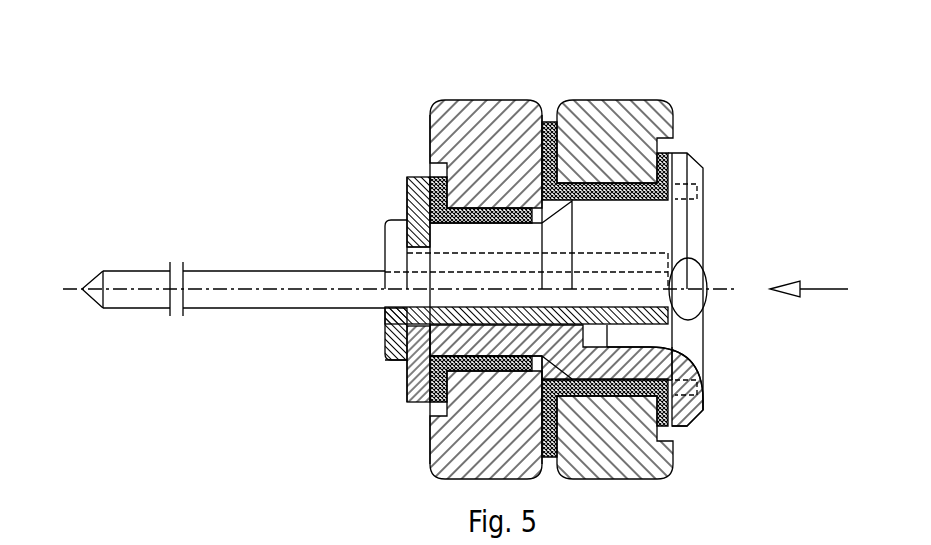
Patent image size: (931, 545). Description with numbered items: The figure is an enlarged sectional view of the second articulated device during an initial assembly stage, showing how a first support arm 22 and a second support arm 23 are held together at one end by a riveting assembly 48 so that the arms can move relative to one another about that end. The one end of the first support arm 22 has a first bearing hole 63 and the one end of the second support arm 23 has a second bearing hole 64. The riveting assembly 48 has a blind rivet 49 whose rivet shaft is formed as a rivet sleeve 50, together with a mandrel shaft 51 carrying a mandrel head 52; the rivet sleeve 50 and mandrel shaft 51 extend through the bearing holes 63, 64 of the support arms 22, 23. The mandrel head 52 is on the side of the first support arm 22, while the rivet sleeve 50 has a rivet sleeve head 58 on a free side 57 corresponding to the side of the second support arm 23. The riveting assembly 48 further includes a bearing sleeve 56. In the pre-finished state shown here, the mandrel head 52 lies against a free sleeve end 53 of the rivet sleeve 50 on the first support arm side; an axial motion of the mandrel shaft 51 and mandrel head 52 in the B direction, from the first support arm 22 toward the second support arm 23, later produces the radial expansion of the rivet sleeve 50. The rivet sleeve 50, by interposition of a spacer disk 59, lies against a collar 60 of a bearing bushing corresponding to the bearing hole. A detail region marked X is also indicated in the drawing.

The first support arm 22 is at (610, 115).
The second support arm 23 is at (473, 116).
The riveting assembly 48 is at (715, 267).
The blind rivet 49 is at (218, 310).
The rivet sleeve 50 is at (605, 315).
The mandrel shaft 51 is at (302, 293).
The mandrel head 52 is at (712, 306).
The free sleeve end 53 is at (669, 325).
The bearing sleeve 56 is at (703, 411).
The free side 57 is at (395, 378).
The rivet sleeve head 58 is at (402, 338).
The spacer disk 59 is at (418, 193).
The collar 60 is at (422, 403).
The first bearing hole 63 is at (633, 188).
The second bearing hole 64 is at (500, 213).
The detail X is at (699, 191).
The B direction B is at (809, 273).